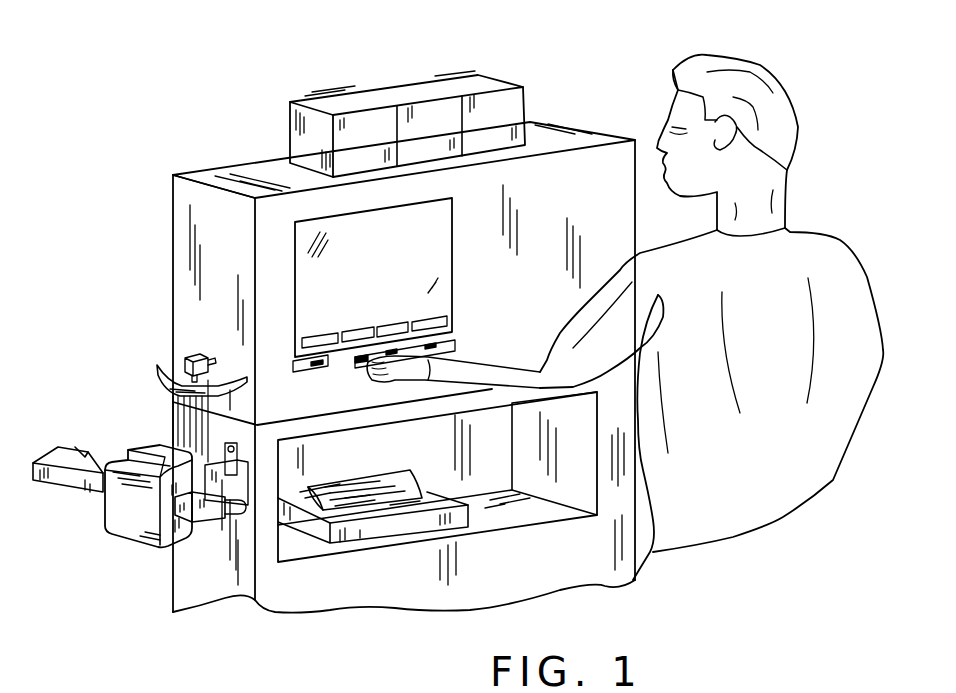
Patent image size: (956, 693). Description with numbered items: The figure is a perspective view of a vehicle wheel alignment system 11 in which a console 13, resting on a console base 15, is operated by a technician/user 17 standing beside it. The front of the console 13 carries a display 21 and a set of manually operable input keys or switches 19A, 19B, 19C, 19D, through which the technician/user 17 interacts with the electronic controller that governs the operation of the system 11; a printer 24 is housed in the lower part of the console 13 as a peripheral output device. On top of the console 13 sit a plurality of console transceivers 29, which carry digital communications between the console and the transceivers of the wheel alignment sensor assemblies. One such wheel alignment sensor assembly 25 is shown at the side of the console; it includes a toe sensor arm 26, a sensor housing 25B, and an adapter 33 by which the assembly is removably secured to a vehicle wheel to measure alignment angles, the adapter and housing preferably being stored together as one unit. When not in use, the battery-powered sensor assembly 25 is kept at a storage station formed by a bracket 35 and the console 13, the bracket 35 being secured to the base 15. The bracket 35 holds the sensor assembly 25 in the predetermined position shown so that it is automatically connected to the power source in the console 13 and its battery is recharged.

The vehicle wheel alignment system 11 is at (200, 135).
The console 13 is at (589, 123).
The console base 15 is at (551, 561).
The technician/user 17 is at (784, 80).
The input key 19A is at (300, 372).
The input key 19B is at (367, 360).
The input key 19C is at (398, 352).
The input key 19D is at (430, 342).
The display 21 is at (382, 243).
The printer 24 is at (387, 528).
The wheel alignment sensor assembly 25 is at (103, 518).
The sensor housing 25B is at (149, 513).
The toe sensor arm 26 is at (64, 448).
The console transceivers 29 is at (372, 147).
The adapter 33 is at (172, 417).
The bracket 35 is at (236, 480).